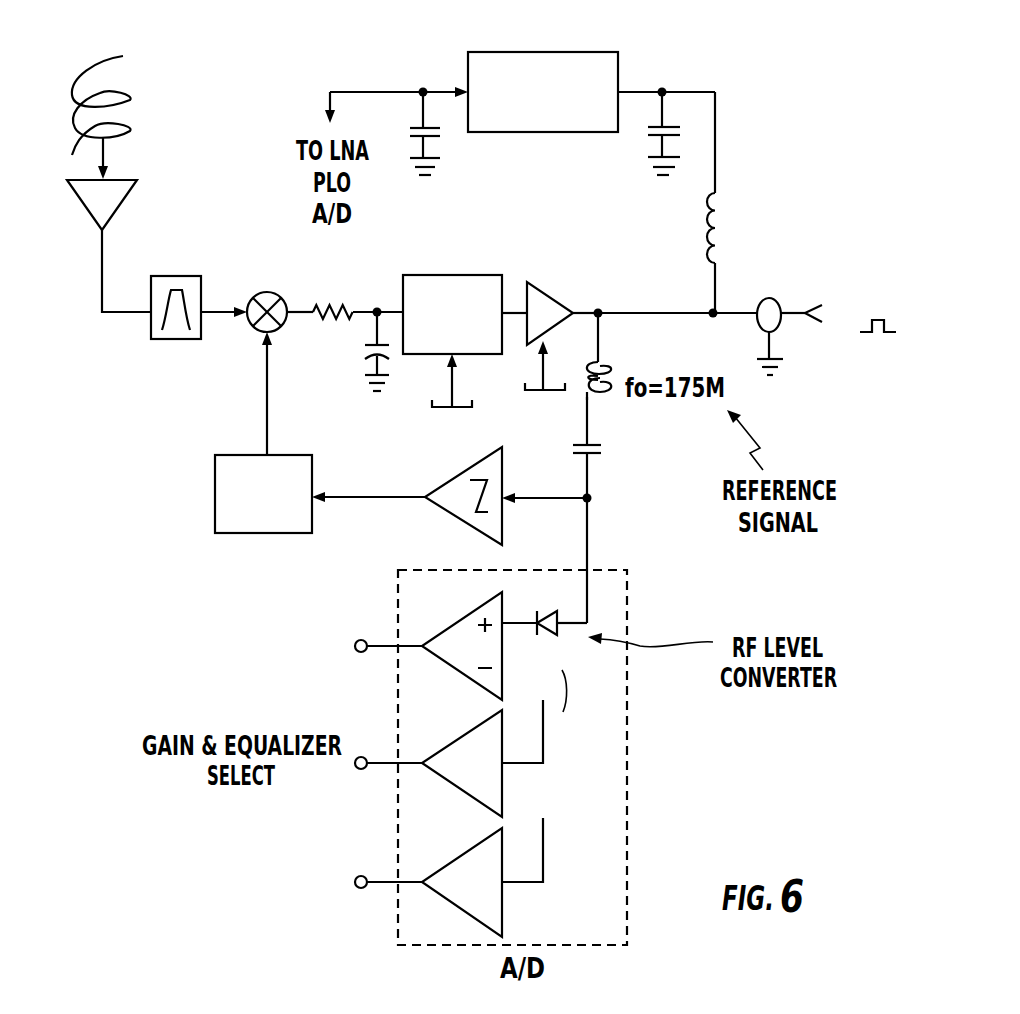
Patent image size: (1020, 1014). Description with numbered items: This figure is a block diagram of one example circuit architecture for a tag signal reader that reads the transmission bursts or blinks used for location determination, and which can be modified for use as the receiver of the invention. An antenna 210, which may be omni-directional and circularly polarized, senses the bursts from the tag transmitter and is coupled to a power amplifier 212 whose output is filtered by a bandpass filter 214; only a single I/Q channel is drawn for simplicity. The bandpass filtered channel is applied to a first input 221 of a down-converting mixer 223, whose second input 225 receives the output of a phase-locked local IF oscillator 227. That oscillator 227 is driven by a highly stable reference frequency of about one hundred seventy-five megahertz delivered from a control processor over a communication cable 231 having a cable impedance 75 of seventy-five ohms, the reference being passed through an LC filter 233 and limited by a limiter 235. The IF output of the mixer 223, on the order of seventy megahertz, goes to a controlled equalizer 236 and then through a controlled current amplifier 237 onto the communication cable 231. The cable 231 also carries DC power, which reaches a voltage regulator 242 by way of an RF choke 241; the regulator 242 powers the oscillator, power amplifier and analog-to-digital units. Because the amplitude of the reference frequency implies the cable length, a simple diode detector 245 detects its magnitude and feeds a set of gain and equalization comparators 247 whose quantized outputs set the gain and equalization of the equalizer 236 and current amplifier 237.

The antenna 210 is at (128, 85).
The power amplifier 212 is at (82, 203).
The bandpass filter 214 is at (182, 341).
The first input 221 is at (296, 279).
The down-converting mixer 223 is at (262, 292).
The second input 225 is at (262, 333).
The phase-locked local IF oscillator 227 is at (215, 492).
The communication cable 231 is at (648, 312).
The LC filter 233 is at (608, 365).
The limiter 235 is at (440, 470).
The controlled equalizer 236 is at (455, 275).
The controlled current amplifier 237 is at (558, 300).
The RF choke 241 is at (712, 216).
The voltage regulator 242 is at (590, 52).
The diode detector 245 is at (555, 614).
The gain and equalization comparators 247 is at (553, 843).
The coaxial connector 75 is at (826, 336).